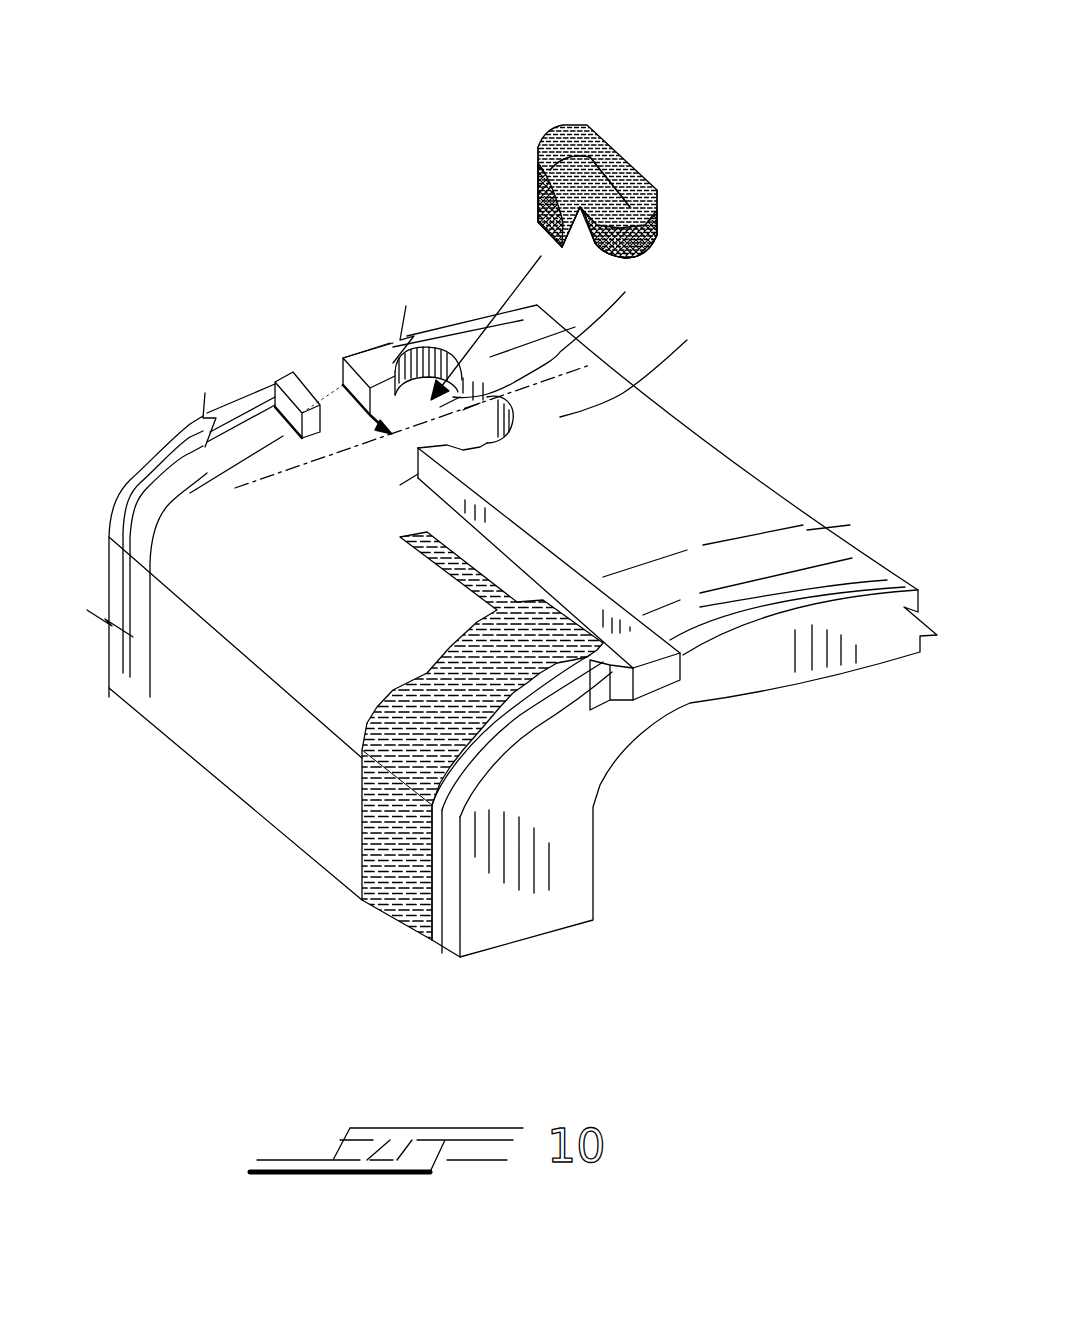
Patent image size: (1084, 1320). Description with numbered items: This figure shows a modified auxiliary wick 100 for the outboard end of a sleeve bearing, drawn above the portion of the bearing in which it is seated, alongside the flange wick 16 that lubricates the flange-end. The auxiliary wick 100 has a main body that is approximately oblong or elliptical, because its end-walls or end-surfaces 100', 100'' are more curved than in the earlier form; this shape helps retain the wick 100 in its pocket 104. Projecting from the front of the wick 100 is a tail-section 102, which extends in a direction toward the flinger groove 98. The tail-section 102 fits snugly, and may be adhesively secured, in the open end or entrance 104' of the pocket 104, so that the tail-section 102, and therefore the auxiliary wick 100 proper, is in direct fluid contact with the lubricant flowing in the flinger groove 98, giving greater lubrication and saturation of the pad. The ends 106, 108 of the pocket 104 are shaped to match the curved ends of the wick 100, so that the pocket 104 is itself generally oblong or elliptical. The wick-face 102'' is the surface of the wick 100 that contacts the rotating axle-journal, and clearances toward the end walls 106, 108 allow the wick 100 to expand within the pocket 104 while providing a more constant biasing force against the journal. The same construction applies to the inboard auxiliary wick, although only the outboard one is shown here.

The flange wick 16 is at (392, 888).
The flinger groove 98 is at (318, 388).
The auxiliary wick 100 is at (602, 149).
The end-wall of the auxiliary wick 100' is at (495, 163).
The end-wall of the auxiliary wick 100'' is at (695, 224).
The tail-section 102 is at (506, 202).
The wick-face 102'' is at (672, 157).
The pocket 104 is at (562, 331).
The open end or entrance of the pocket 104' is at (322, 314).
The end of the pocket 106 is at (641, 360).
The end of the pocket 108 is at (435, 345).